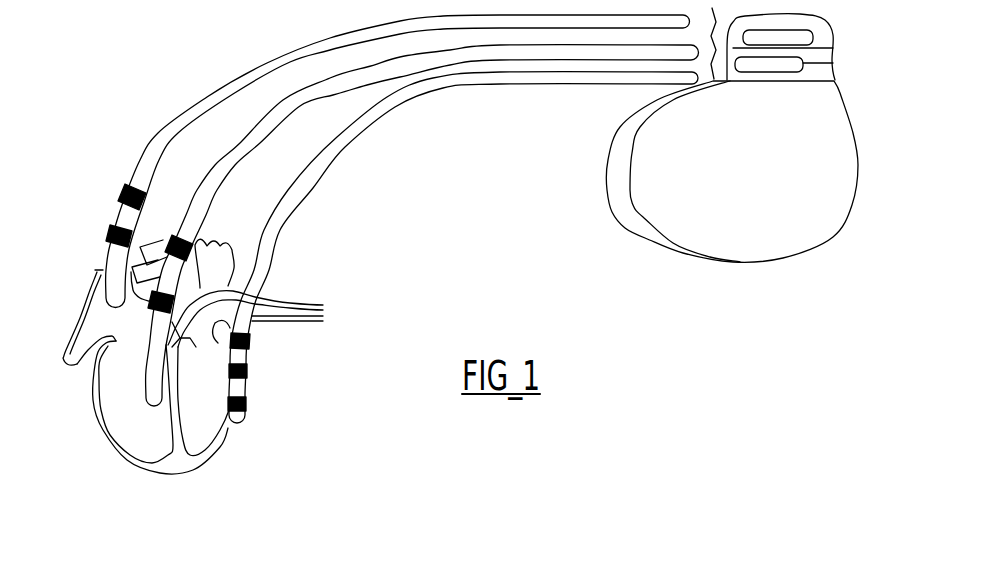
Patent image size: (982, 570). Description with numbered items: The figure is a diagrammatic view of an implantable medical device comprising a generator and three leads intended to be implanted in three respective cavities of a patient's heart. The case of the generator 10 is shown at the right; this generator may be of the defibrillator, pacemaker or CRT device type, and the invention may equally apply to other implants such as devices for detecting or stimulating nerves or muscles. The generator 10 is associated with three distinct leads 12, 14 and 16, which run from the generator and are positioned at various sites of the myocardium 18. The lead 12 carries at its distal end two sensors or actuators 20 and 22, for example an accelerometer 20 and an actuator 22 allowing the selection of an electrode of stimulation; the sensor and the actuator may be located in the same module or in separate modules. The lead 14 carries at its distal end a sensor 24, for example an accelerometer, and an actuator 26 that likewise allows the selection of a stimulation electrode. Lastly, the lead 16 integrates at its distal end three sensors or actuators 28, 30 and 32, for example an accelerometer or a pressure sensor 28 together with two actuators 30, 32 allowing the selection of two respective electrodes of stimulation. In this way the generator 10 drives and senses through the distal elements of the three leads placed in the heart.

The generator 10 is at (828, 225).
The lead 12 is at (207, 97).
The lead 14 is at (240, 143).
The lead 16 is at (298, 187).
The myocardium 18 is at (123, 444).
The accelerometer 20 is at (128, 190).
The actuator 22 is at (111, 233).
The sensor 24 is at (170, 240).
The actuator 26 is at (213, 270).
The sensor 28 is at (250, 342).
The actuator 30 is at (247, 371).
The actuator 32 is at (243, 407).